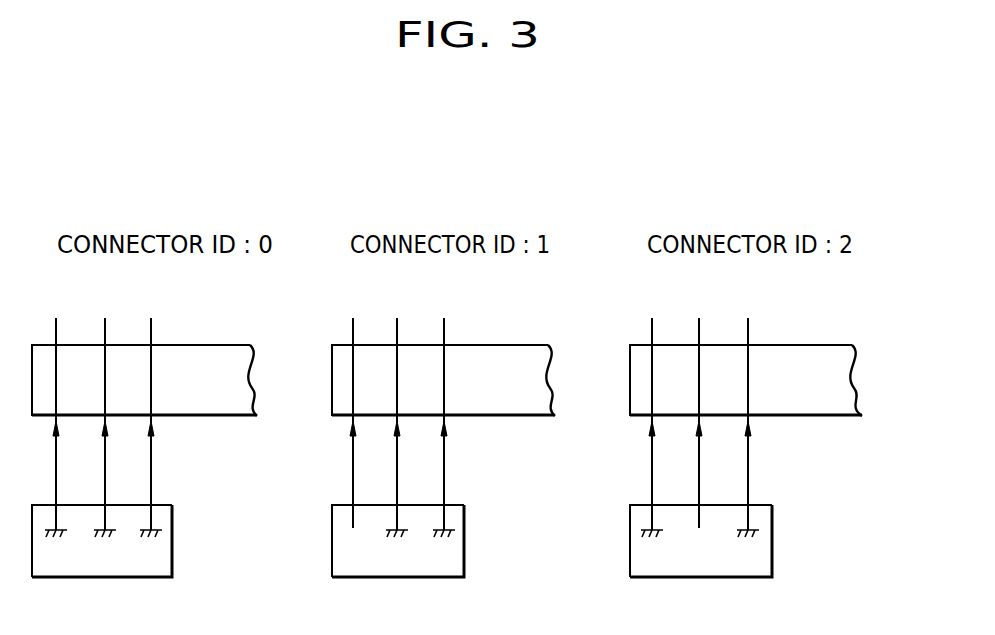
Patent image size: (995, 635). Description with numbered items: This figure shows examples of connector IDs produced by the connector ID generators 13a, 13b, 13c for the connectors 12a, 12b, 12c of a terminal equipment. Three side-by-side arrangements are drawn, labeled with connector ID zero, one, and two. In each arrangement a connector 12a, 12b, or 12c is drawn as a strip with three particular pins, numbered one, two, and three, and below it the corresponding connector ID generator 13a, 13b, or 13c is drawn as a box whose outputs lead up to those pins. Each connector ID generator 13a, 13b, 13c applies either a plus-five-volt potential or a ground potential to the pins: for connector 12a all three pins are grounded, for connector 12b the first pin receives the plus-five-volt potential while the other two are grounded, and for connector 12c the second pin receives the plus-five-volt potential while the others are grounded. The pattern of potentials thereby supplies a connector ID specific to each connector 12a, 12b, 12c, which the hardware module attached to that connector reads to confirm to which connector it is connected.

The connector 12a is at (250, 345).
The connector 12b is at (548, 345).
The connector 12c is at (852, 345).
The connector ID generator 13a is at (172, 505).
The connector ID generator 13b is at (464, 505).
The connector ID generator 13c is at (772, 505).